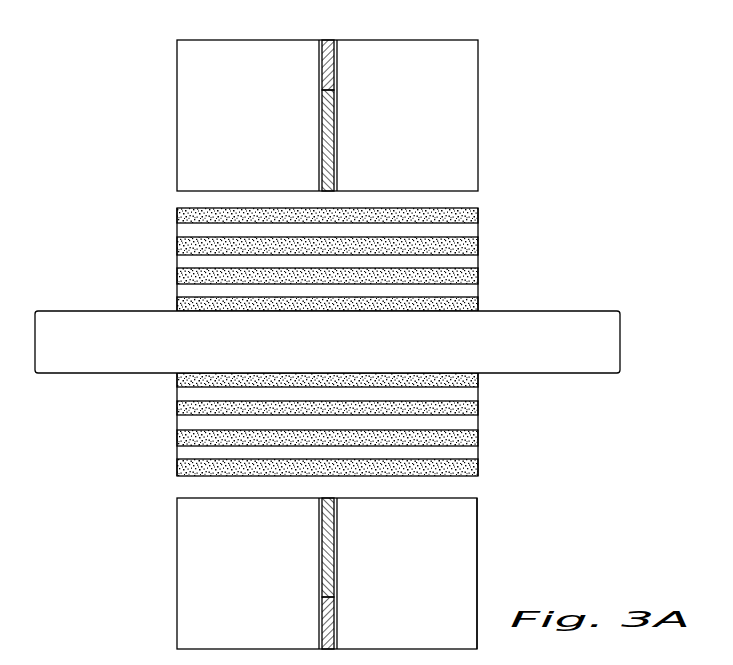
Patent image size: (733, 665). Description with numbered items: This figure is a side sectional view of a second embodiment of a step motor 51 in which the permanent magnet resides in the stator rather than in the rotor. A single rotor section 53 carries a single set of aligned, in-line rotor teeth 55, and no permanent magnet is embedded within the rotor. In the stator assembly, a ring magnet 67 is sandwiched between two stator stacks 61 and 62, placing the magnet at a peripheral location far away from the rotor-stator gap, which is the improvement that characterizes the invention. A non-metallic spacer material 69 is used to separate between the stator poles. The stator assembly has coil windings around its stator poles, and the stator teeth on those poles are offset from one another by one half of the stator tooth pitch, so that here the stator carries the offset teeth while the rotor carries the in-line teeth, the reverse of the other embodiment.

The step motor 51 is at (118, 70).
The rotor section 53 is at (177, 260).
The rotor teeth 55 is at (478, 220).
The stator stack 61 is at (176, 563).
The stator stack 62 is at (477, 548).
The ring magnet 67 is at (329, 40).
The non-metallic spacer material 69 is at (333, 133).